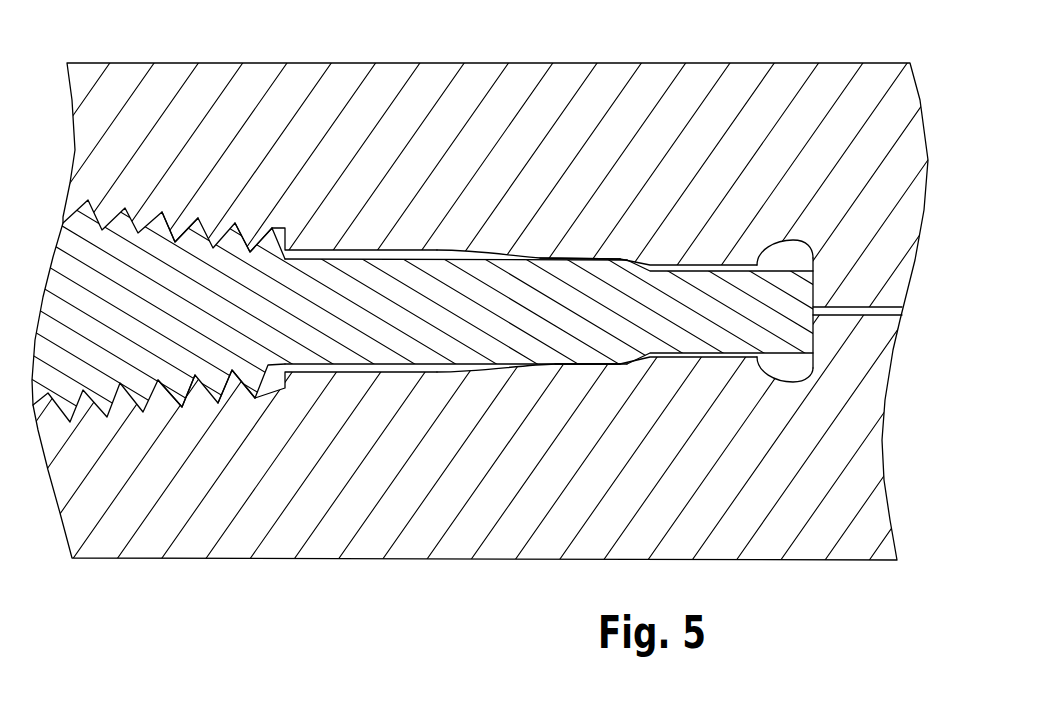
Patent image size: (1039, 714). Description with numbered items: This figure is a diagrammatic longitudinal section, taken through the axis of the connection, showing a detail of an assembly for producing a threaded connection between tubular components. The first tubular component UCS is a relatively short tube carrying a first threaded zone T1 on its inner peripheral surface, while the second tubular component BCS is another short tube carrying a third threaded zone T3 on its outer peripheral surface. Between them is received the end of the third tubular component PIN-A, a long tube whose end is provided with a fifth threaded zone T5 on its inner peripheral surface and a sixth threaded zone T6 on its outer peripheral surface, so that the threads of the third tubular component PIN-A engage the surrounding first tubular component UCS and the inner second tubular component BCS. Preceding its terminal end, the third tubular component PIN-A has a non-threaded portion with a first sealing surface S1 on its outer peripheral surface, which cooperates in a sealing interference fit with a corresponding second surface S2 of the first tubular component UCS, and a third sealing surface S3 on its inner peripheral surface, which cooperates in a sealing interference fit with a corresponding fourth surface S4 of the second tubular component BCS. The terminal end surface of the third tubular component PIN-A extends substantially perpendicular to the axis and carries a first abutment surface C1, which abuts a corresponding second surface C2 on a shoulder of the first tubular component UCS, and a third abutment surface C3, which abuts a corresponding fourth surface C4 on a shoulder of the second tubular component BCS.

The first tubular component UCS is at (348, 123).
The second tubular component BCS is at (422, 475).
The third tubular component PIN-A is at (316, 368).
The first threaded zone T1 is at (182, 228).
The third threaded zone T3 is at (230, 387).
The fifth threaded zone T5 is at (183, 393).
The sixth threaded zone T6 is at (245, 232).
The first sealing surface S1 is at (567, 260).
The second surface S2 is at (540, 257).
The third sealing surface S3 is at (572, 363).
The fourth surface S4 is at (543, 365).
The first abutment surface C1 is at (815, 292).
The second surface C2 is at (813, 286).
The third abutment surface C3 is at (817, 322).
The fourth surface C4 is at (813, 353).